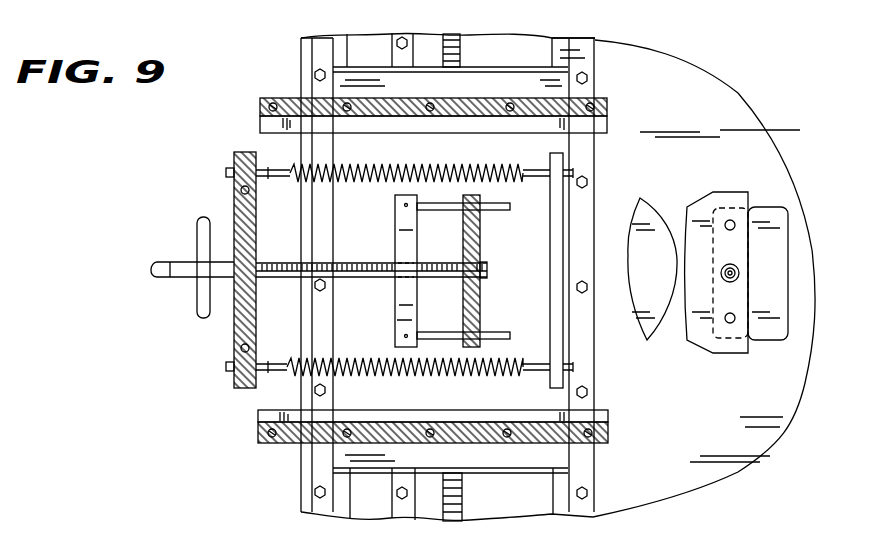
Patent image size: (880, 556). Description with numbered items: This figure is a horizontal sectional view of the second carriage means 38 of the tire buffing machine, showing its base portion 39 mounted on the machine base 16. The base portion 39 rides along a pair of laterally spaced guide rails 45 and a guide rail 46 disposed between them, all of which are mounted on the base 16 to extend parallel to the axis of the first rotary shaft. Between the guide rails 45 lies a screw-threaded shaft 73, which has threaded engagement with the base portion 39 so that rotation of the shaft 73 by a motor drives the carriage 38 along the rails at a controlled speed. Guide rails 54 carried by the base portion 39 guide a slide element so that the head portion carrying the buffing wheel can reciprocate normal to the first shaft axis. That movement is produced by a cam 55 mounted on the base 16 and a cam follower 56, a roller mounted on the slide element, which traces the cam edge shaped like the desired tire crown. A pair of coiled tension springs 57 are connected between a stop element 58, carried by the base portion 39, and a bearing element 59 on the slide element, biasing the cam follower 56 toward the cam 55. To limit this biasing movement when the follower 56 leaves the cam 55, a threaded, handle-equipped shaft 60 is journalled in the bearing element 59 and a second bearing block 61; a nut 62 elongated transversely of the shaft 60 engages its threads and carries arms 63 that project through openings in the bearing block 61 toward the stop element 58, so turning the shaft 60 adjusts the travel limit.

The base 16 is at (680, 72).
The second carriage means 38 is at (200, 437).
The base portion 39 is at (618, 117).
The guide rails 45 is at (313, 49).
The guide rail 46 is at (405, 33).
The screw-threaded shaft 73 is at (460, 52).
The guide rails 54 is at (259, 108).
The bearing element 59 is at (233, 343).
The threaded, handle-equipped shaft 60 is at (350, 264).
The nut 62 is at (398, 223).
The second bearing block 61 is at (481, 247).
The arms 63 is at (503, 205).
The coiled tension springs 57 is at (410, 170).
The stop element 58 is at (567, 350).
The cam follower 56 is at (647, 203).
The cam 55 is at (722, 197).